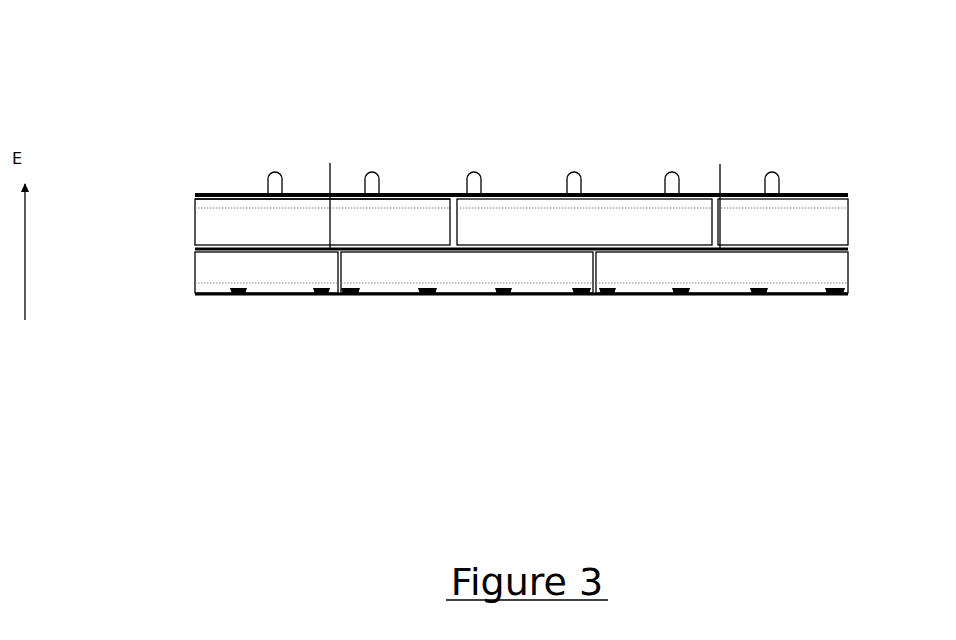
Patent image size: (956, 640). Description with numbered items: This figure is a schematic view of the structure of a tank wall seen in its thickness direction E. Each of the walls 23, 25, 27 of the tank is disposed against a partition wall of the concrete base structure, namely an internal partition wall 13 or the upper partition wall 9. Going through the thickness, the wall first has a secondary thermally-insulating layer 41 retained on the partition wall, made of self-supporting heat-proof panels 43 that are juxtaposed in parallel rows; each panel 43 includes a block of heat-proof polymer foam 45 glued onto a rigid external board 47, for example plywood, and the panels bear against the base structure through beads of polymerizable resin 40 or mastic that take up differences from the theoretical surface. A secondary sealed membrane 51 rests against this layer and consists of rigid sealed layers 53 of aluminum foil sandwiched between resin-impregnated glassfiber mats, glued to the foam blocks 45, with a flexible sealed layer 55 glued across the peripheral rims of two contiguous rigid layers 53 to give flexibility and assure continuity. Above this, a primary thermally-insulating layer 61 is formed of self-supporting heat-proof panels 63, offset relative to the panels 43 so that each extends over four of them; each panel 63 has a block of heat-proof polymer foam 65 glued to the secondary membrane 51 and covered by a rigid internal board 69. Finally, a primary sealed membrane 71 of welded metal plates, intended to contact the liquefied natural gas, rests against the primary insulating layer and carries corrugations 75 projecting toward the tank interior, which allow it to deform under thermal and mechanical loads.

The upper wall 23 is at (521, 101).
The wall 25 is at (521, 101).
The bottom wall 27 is at (315, 80).
The upper partition wall 9 is at (482, 325).
The internal partition wall 13 is at (195, 296).
The beads of polymerizable resin 40 is at (240, 297).
The secondary thermally-insulating layer 41 is at (853, 272).
The self-supporting heat-proof panels 43 is at (214, 278).
The block of heat-proof polymer foam 45 is at (457, 273).
The rigid external board 47 is at (381, 281).
The secondary sealed membrane 51 is at (852, 230).
The rigid sealed layers 53 is at (223, 250).
The flexible sealed layer 55 is at (330, 163).
The primary thermally-insulating layer 61 is at (182, 224).
The self-supporting heat-proof panels 63 is at (400, 218).
The block of heat-proof polymer foam 65 is at (313, 218).
The rigid internal board 69 is at (213, 205).
The primary sealed membrane 71 is at (552, 191).
The corrugations 75 is at (372, 172).